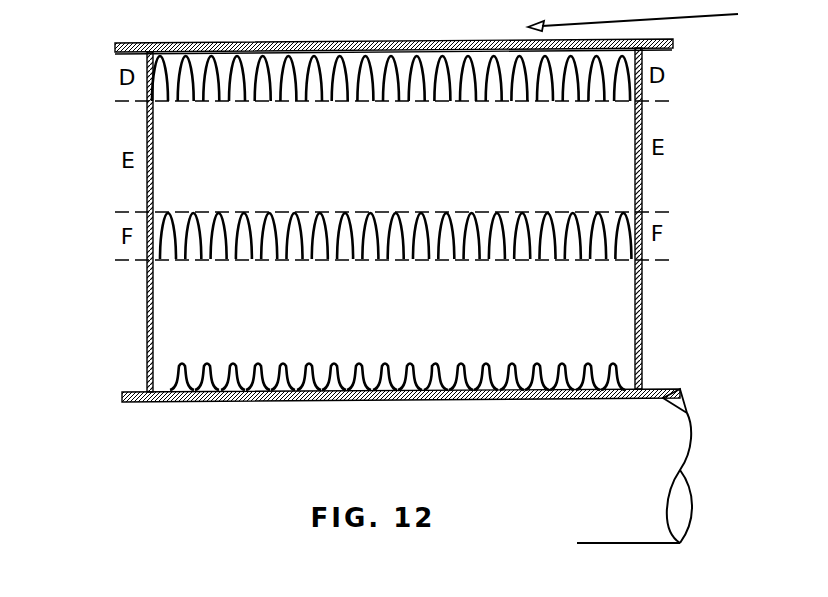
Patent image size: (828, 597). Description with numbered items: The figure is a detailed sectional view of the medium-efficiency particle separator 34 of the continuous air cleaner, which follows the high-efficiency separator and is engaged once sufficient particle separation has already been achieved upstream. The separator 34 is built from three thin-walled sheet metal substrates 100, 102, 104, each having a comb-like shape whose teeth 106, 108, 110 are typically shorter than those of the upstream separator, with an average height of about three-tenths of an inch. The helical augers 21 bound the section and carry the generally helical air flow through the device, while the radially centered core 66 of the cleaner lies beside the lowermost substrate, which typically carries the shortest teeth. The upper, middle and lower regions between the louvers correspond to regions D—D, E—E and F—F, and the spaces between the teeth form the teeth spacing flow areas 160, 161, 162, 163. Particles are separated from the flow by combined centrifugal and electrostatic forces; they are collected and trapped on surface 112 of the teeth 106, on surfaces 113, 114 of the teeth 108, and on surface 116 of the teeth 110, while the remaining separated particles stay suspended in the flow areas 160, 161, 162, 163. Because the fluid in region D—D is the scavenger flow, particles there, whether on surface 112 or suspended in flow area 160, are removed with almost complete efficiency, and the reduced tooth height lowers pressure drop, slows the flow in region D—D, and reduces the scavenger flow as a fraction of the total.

The helical auger 21 is at (373, 43).
The medium-efficiency particle separator 34 is at (648, 16).
The radially centered core 66 is at (693, 414).
The thin-walled sheet metal substrate 100 is at (636, 48).
The thin-walled sheet metal substrate 102 is at (643, 207).
The thin-walled sheet metal substrate 104 is at (622, 384).
The teeth 106 is at (628, 54).
The teeth 108 is at (622, 249).
The teeth 110 is at (592, 387).
The surface of teeth 106 112 is at (181, 62).
The surface of teeth 108 113 is at (198, 217).
The surface of teeth 108 114 is at (186, 261).
The surface of teeth 110 116 is at (168, 392).
The teeth spacing flow area 160 is at (242, 80).
The teeth spacing flow area 161 is at (588, 210).
The teeth spacing flow area 162 is at (243, 243).
The teeth spacing flow area 163 is at (195, 376).